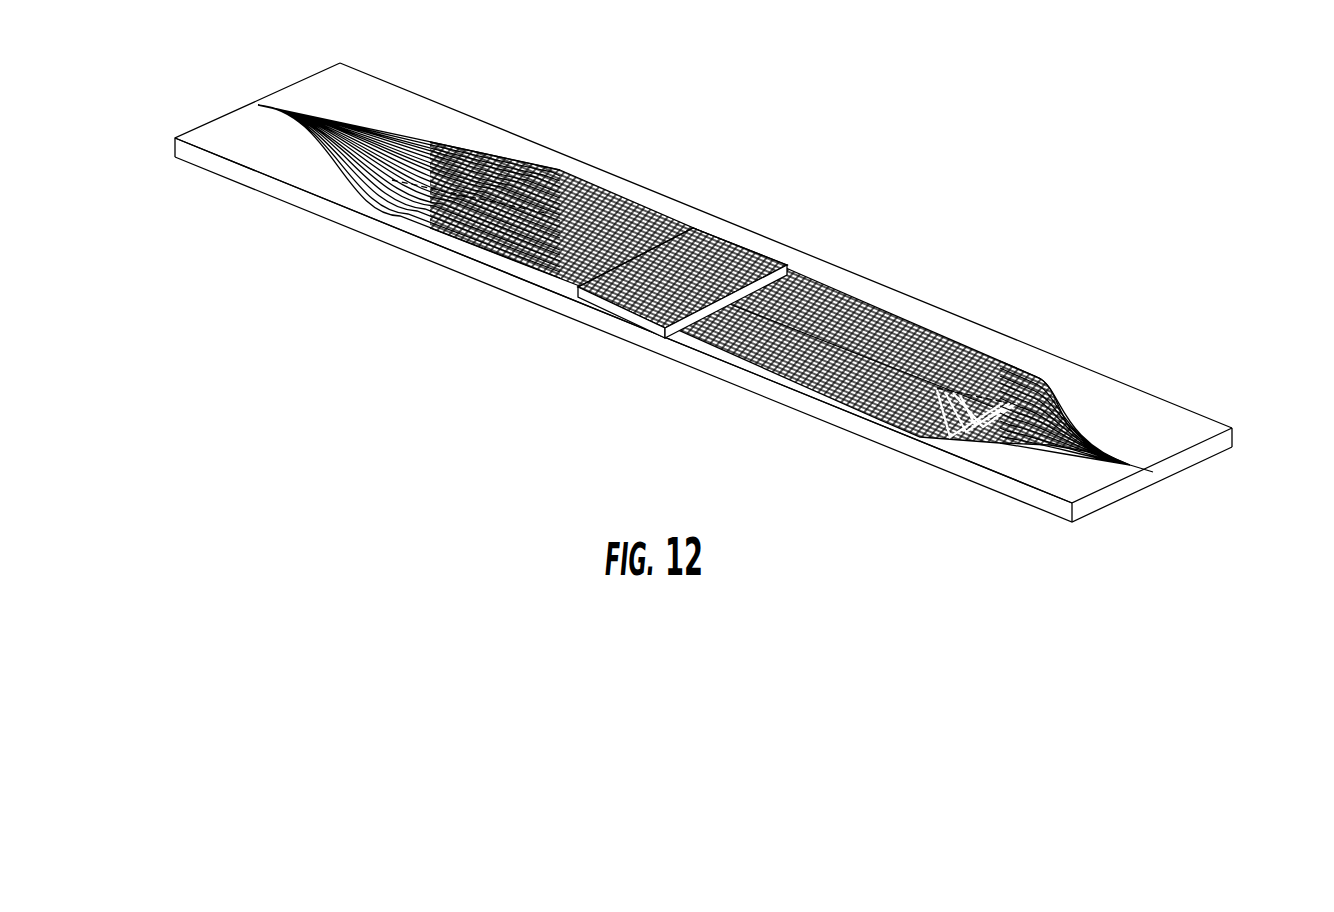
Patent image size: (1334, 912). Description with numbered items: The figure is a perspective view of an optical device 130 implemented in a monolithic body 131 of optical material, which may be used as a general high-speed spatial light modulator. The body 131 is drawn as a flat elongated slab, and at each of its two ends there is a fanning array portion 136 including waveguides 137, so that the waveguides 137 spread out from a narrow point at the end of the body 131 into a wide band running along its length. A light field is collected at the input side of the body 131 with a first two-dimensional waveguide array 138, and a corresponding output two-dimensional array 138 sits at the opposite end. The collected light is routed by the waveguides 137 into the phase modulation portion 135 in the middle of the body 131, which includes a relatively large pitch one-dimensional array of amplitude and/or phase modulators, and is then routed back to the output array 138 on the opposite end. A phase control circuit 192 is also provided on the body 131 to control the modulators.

The optical device 130 is at (707, 286).
The monolithic body 131 is at (707, 292).
The phase modulation portion 135 is at (645, 370).
The fanning array portion 136 is at (717, 201).
The waveguides 137 is at (463, 248).
The two-dimensional waveguide array 138 is at (233, 97).
The phase control circuit 192 is at (745, 247).